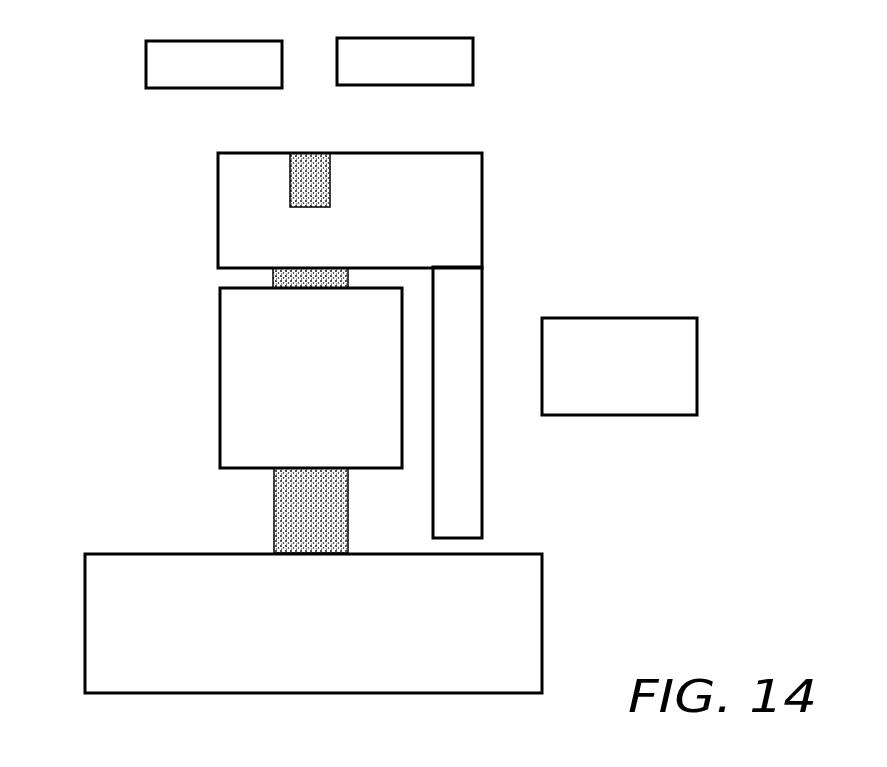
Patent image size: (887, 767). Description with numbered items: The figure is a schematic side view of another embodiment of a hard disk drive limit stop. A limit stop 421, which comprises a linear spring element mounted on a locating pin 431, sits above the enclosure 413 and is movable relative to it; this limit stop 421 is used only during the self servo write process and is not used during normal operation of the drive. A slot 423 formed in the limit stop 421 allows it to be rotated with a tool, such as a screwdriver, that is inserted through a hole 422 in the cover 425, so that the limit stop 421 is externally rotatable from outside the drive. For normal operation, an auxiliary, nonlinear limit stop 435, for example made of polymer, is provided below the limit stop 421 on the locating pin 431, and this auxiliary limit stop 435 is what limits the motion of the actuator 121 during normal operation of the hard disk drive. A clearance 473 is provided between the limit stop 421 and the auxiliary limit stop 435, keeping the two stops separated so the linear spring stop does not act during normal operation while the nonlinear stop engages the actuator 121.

The actuator 121 is at (630, 317).
The enclosure 413 is at (85, 618).
The limit stop 421 is at (218, 240).
The hole 422 is at (304, 42).
The slot 423 is at (303, 150).
The cover 425 is at (473, 65).
The locating pin 431 is at (292, 522).
The auxiliary limit stop 435 is at (219, 322).
The clearance 473 is at (423, 438).